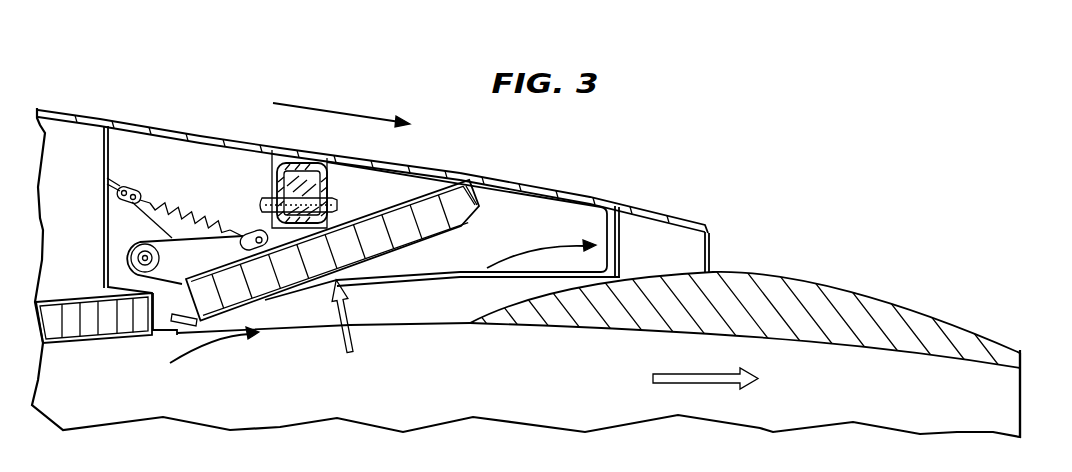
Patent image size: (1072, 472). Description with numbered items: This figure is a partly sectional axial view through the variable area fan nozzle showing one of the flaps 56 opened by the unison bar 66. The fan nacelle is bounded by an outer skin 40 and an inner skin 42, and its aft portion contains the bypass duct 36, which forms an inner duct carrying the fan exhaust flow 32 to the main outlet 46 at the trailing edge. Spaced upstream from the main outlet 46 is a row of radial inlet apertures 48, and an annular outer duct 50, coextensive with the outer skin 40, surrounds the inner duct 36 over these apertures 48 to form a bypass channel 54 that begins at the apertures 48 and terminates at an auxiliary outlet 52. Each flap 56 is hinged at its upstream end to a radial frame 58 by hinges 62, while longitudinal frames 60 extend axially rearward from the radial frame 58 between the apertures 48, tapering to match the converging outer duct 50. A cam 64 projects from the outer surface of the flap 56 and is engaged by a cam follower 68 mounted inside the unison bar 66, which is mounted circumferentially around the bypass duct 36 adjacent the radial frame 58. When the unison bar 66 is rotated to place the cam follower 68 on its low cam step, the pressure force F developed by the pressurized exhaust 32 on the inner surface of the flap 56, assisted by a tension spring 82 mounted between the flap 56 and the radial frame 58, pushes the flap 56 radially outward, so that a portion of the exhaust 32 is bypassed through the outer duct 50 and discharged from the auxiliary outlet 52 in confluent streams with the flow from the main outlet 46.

The fan exhaust flow 32 is at (353, 113).
The bypass duct 36 is at (827, 397).
The outer skin 40 is at (82, 112).
The inner skin 42 is at (85, 345).
The main outlet 46 is at (1018, 404).
The inlet apertures 48 is at (431, 323).
The outer duct 50 is at (633, 206).
The auxiliary outlet 52 is at (709, 257).
The bypass channel 54 is at (524, 227).
The flap 56 is at (425, 238).
The radial frame 58 is at (103, 210).
The longitudinal frame 60 is at (618, 256).
The hinge 62 is at (128, 257).
The cam 64 is at (330, 241).
The unison bar 66 is at (293, 162).
The cam follower 68 is at (316, 165).
The tension spring 82 is at (169, 203).
The pressure force F is at (352, 345).